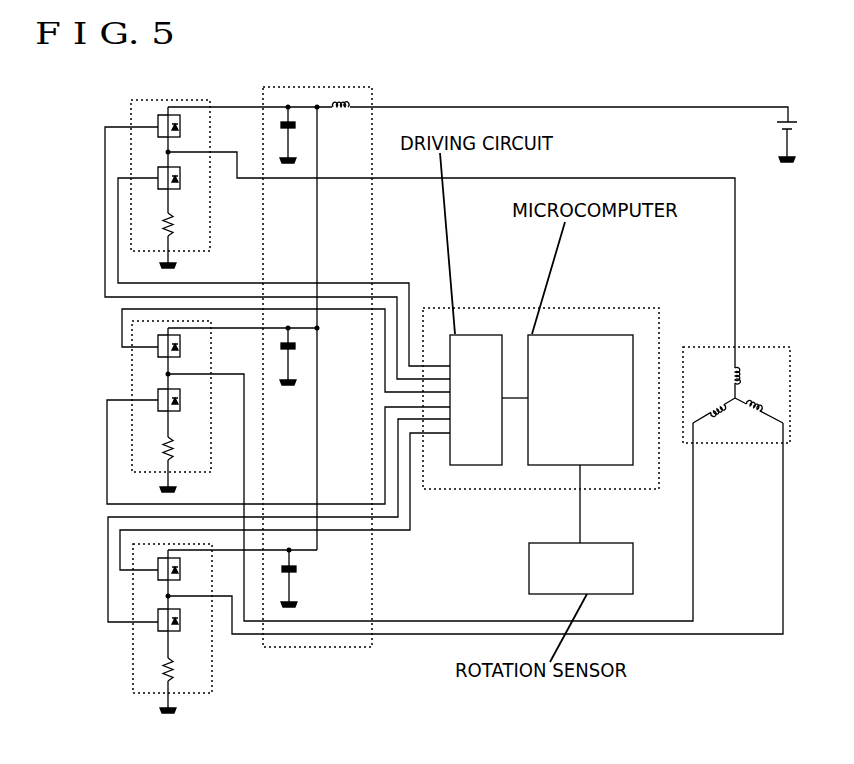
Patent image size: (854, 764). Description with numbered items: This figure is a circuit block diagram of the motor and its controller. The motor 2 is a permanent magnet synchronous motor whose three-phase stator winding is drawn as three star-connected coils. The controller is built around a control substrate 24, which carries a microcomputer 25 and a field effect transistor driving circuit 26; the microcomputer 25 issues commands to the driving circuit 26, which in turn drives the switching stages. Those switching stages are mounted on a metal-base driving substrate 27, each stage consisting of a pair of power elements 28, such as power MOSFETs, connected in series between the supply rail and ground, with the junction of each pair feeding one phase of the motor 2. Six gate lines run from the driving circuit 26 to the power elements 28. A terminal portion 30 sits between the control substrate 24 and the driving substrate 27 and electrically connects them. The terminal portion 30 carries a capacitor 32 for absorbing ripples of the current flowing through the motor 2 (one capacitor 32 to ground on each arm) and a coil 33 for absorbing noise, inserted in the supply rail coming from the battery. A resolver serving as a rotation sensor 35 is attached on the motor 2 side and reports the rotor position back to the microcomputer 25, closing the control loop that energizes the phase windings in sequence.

The motor 2 is at (733, 446).
The control substrate 24 is at (473, 490).
The microcomputer 25 is at (583, 333).
The field effect transistor driving circuit 26 is at (474, 333).
The driving substrate 27 is at (145, 251).
The power element 28 is at (163, 138).
The terminal portion 30 is at (323, 648).
The capacitor 32 is at (281, 126).
The coil 33 is at (338, 96).
The rotation sensor 35 is at (529, 573).